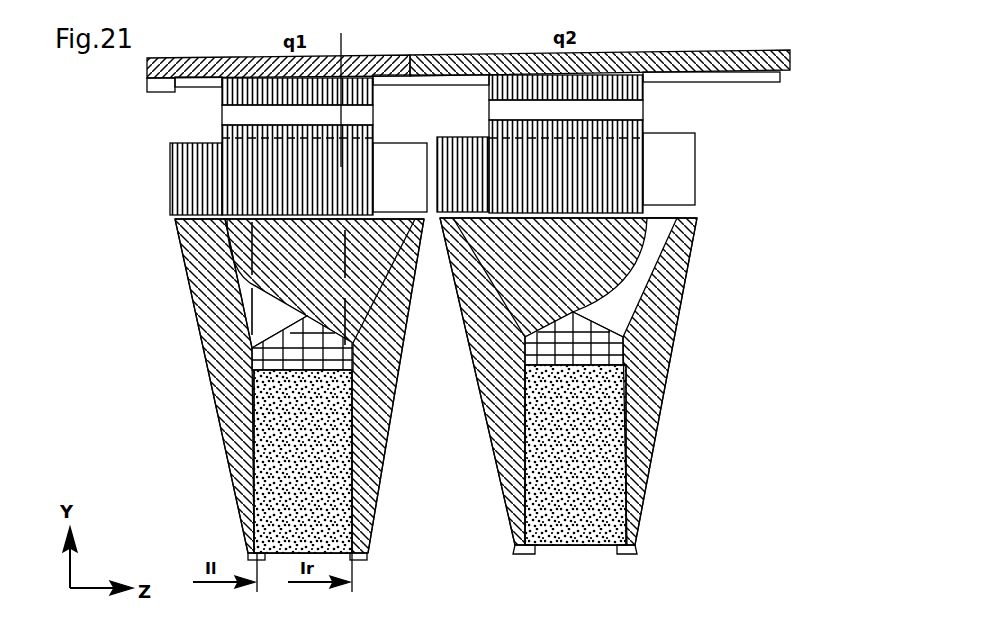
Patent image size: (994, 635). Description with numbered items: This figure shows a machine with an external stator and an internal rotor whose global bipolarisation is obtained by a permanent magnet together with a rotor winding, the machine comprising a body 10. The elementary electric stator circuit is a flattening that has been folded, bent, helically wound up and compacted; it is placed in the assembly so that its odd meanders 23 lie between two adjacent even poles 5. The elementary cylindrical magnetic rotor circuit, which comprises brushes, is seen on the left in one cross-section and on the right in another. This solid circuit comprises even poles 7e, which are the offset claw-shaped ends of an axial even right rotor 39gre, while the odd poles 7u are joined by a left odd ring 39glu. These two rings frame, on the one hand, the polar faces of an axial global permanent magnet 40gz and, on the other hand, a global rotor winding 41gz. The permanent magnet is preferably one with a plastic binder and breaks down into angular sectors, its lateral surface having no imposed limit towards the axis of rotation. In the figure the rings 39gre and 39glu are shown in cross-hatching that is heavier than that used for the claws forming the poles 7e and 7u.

The body 10 is at (157, 72).
The meander 23 is at (690, 150).
The pole 5 is at (273, 214).
The even poles 7e is at (290, 247).
The odd poles 7u is at (237, 293).
The global rotor winding 41gz is at (205, 335).
The axial global permanent magnet 40gz is at (245, 382).
The left odd ring 39glu is at (235, 428).
The axial even right rotor 39gre is at (377, 466).